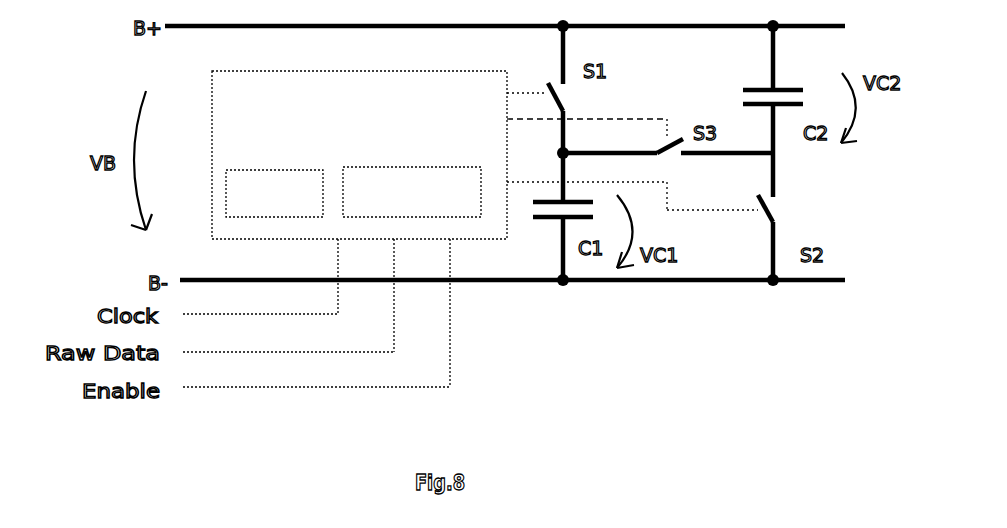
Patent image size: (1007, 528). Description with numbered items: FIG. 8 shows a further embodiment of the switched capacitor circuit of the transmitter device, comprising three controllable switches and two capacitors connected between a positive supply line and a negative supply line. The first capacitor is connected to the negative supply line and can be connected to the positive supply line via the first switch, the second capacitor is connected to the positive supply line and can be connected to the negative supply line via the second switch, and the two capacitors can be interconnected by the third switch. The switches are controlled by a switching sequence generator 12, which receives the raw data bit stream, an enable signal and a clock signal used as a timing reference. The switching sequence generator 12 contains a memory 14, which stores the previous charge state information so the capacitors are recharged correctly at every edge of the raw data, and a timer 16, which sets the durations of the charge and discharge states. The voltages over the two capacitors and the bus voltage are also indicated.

The switching sequence generator 12 is at (222, 93).
The memory 14 is at (472, 207).
The timer 16 is at (318, 208).